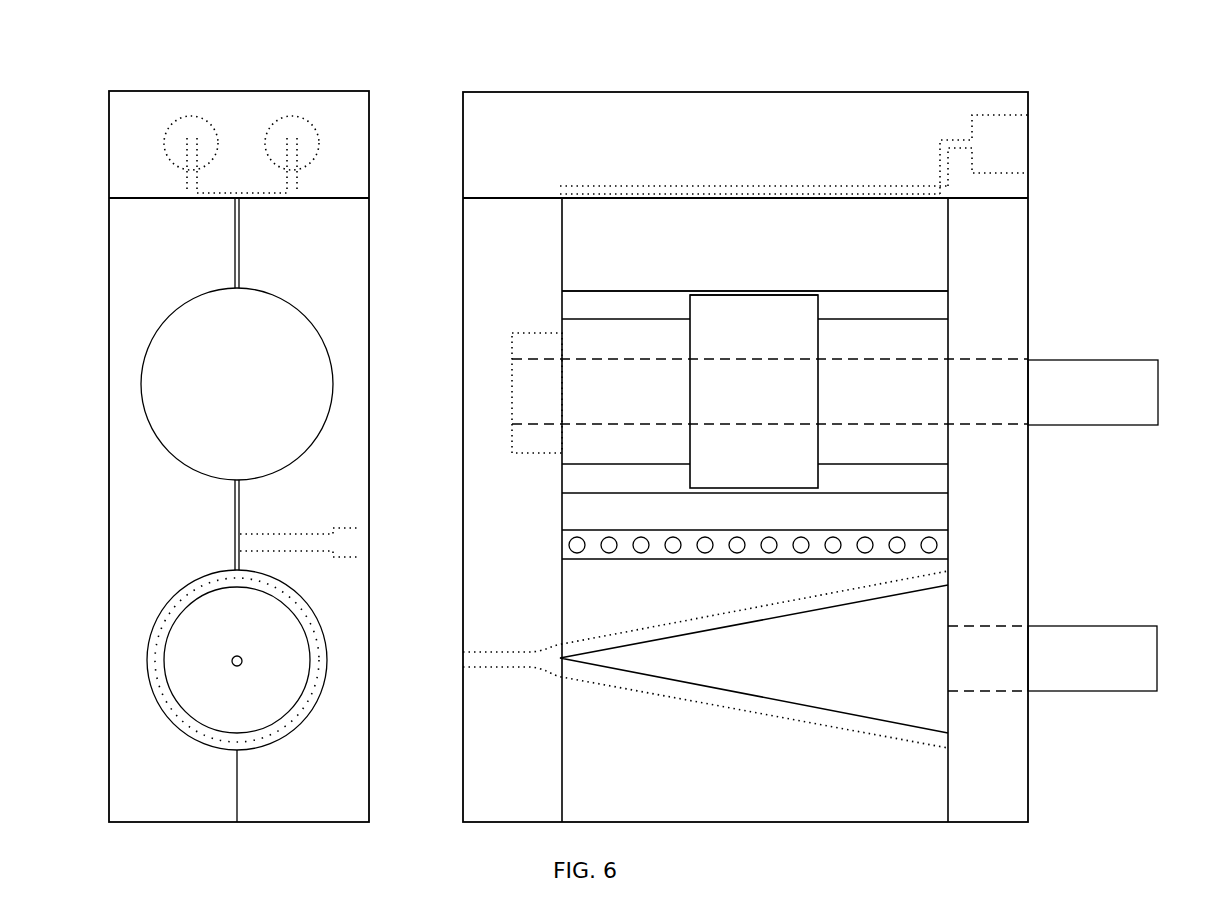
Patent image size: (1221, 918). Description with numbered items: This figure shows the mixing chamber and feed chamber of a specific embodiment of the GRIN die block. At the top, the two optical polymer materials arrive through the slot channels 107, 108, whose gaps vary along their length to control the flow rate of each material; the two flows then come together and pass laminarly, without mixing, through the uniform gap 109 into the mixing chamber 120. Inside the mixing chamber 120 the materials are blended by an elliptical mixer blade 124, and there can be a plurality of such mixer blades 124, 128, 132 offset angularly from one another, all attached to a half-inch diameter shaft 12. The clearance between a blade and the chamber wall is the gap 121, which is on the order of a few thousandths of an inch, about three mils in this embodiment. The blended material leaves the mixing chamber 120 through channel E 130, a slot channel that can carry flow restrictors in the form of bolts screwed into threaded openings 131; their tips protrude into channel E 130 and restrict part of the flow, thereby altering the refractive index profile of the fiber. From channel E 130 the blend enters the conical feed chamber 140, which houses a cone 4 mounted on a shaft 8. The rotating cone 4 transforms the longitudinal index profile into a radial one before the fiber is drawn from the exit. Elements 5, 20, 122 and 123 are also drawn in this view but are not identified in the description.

The cone 4 is at (870, 673).
The wedge insert 5 is at (902, 725).
The shaft 8 is at (1108, 683).
The shaft 12 is at (1075, 407).
The bearing balls 20 is at (915, 552).
The channel 107 is at (192, 182).
The channel 108 is at (290, 178).
The uniform gap 109 is at (236, 264).
The mixing chamber 120 is at (320, 366).
The gap 121 is at (727, 293).
The carriage top edge 122 is at (783, 293).
The upper rail 123 is at (670, 292).
The elliptical mixer blade 124 is at (777, 342).
The mixer blade 128 is at (615, 347).
The channel E 130 is at (625, 517).
The threaded openings 131 is at (297, 542).
The mixer blade 132 is at (882, 345).
The conical feed chamber 140 is at (682, 690).